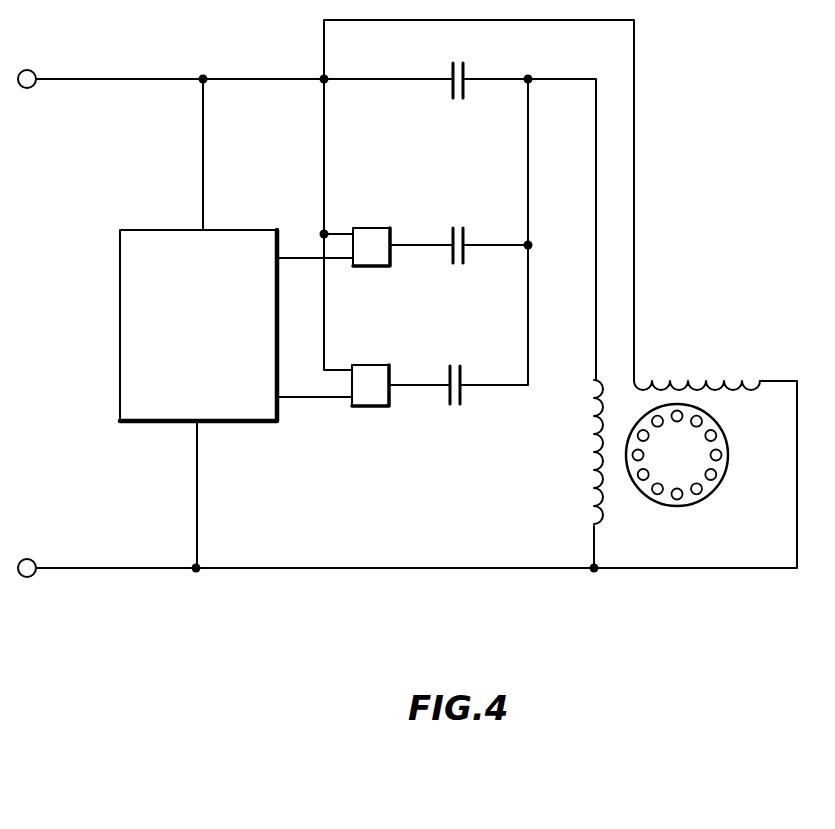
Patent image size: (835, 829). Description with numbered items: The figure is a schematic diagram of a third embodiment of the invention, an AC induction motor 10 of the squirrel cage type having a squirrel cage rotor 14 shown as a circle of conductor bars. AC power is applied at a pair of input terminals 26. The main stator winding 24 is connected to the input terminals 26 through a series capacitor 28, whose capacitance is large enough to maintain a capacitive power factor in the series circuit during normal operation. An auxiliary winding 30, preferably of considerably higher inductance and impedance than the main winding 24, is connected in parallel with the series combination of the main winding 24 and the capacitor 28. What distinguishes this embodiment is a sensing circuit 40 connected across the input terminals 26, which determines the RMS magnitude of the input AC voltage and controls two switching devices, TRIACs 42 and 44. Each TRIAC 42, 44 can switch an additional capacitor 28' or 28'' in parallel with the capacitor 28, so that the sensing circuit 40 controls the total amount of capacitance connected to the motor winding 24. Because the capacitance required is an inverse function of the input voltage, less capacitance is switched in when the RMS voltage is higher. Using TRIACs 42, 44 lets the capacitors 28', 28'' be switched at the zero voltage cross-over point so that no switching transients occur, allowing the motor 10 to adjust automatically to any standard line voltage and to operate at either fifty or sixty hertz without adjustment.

The AC induction motor 10 is at (714, 499).
The squirrel cage rotor 14 is at (718, 428).
The main stator winding 24 is at (593, 492).
The input terminals 26 is at (30, 88).
The series capacitor 28 is at (485, 68).
The additional capacitor 28' is at (475, 222).
The additional capacitor 28'' is at (474, 362).
The auxiliary winding 30 is at (727, 382).
The sensing circuit 40 is at (158, 422).
The TRIAC 42 is at (370, 228).
The TRIAC 44 is at (372, 365).